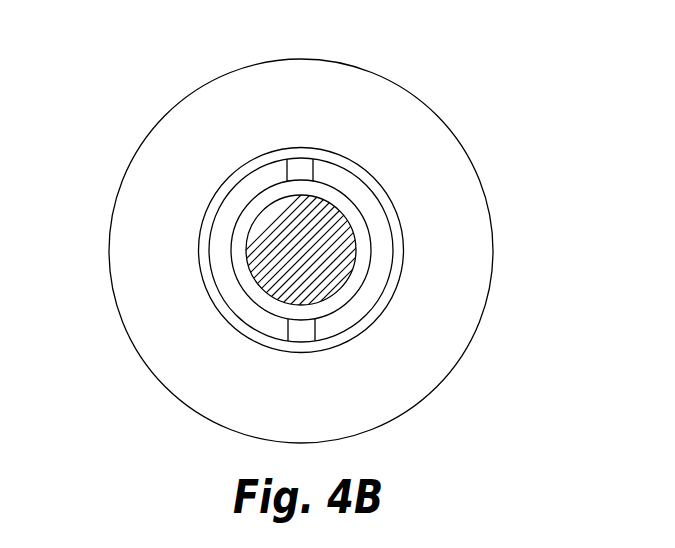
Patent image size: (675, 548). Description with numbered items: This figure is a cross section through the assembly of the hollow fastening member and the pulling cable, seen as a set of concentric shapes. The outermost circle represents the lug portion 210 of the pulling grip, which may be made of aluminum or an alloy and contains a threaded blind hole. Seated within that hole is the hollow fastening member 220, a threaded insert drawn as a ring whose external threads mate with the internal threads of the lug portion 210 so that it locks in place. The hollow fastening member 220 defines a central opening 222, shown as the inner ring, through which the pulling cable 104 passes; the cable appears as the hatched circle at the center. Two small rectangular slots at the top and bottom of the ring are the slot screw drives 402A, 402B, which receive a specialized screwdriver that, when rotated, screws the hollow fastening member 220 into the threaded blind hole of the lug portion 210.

The lug portion 210 is at (323, 228).
The hollow fastening member 220 is at (400, 222).
The opening 222 is at (429, 224).
The pulling cable 104 is at (417, 235).
The slot screw drive 402A is at (305, 333).
The slot screw drive 402B is at (185, 136).